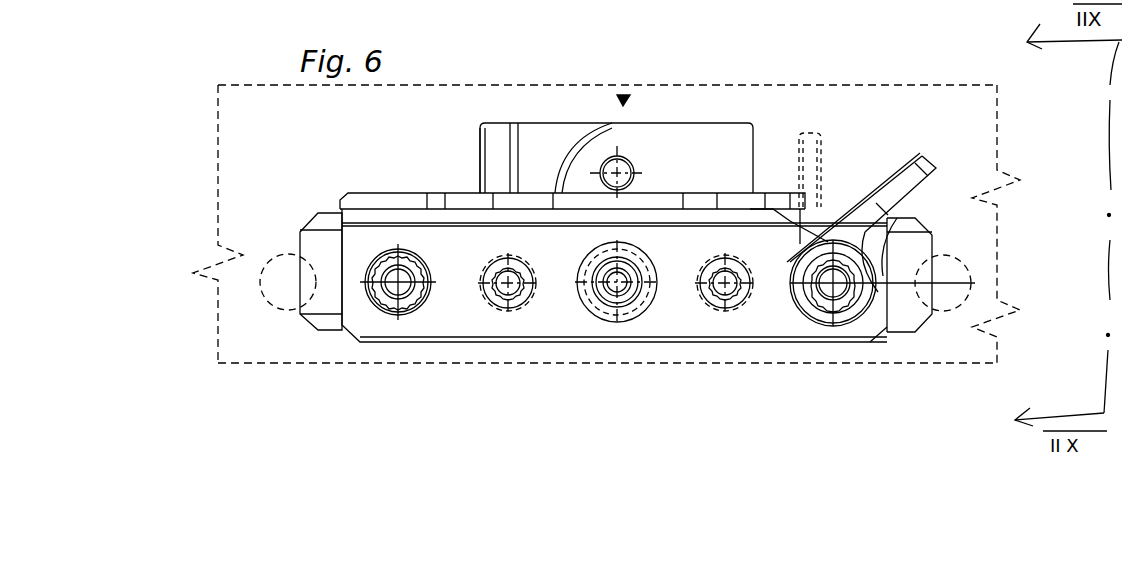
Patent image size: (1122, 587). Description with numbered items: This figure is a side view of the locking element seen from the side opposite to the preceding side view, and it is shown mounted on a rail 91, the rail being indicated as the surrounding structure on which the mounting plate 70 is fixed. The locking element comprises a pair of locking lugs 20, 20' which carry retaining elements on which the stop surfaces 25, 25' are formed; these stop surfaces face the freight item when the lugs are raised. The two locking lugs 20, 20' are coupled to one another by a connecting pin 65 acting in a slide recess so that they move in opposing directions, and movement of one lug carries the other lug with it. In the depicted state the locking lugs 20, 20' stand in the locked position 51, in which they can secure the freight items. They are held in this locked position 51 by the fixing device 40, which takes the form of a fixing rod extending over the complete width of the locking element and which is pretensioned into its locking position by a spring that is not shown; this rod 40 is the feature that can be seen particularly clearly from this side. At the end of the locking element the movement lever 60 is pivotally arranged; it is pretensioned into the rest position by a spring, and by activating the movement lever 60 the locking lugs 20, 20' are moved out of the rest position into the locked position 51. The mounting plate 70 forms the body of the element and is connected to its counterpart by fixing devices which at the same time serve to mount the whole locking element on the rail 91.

The locking lug 20 is at (573, 128).
The locking lug 20' is at (541, 129).
The stop surface 25 is at (797, 154).
The stop surface 25' is at (436, 160).
The fixing rod 40 is at (623, 328).
The locked position 51 is at (625, 95).
The movement lever 60 is at (932, 155).
The connecting pin 65 is at (637, 172).
The mounting plate 70 is at (735, 318).
The rail 91 is at (973, 142).